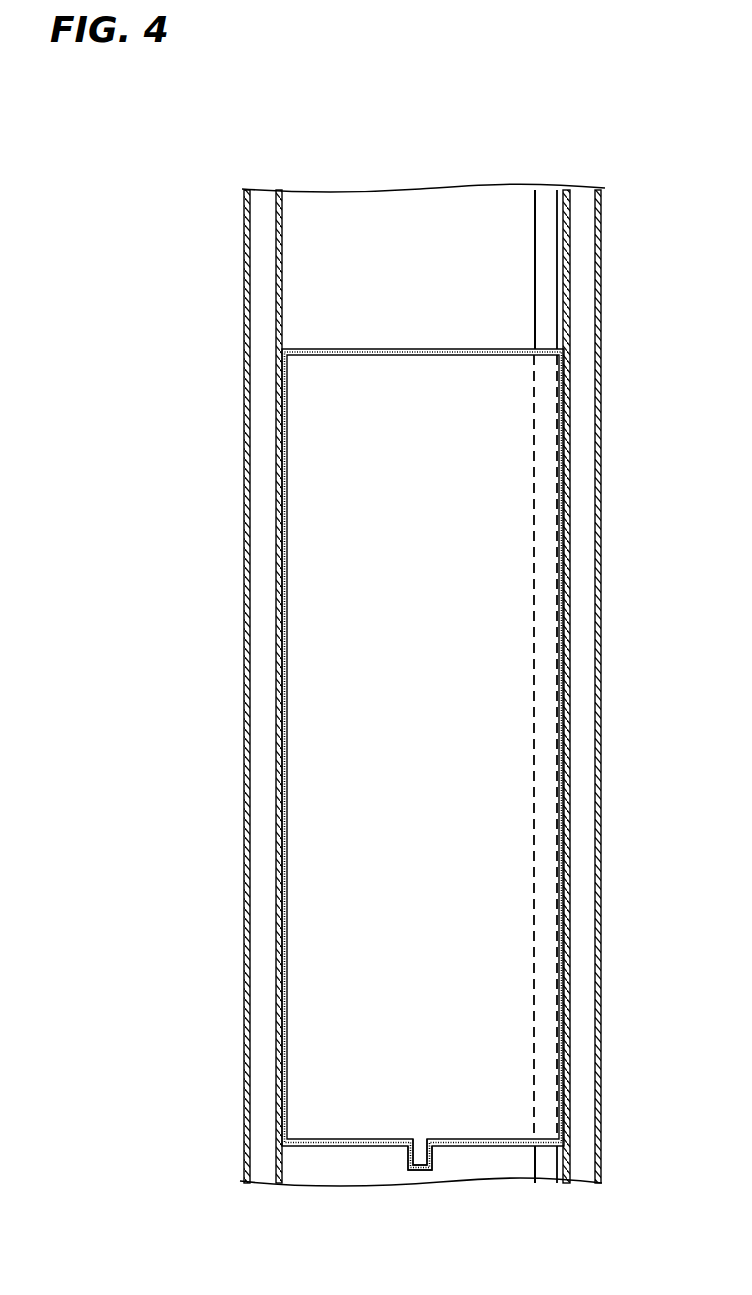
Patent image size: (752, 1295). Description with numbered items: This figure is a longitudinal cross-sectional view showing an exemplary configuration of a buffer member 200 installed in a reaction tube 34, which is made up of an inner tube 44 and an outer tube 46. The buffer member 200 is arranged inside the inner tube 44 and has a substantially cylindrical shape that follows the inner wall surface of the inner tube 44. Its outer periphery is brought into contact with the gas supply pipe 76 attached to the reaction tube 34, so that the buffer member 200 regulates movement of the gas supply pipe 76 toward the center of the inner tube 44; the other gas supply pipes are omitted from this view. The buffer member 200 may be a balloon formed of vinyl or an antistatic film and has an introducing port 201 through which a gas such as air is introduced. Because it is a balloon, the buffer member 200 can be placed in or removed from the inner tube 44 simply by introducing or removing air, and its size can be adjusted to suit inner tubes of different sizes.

The buffer member 200 is at (429, 349).
The introducing port 201 is at (418, 1171).
The reaction tube 34 is at (631, 686).
The inner tube 44 is at (566, 378).
The outer tube 46 is at (602, 403).
The gas supply pipe 76 is at (553, 543).